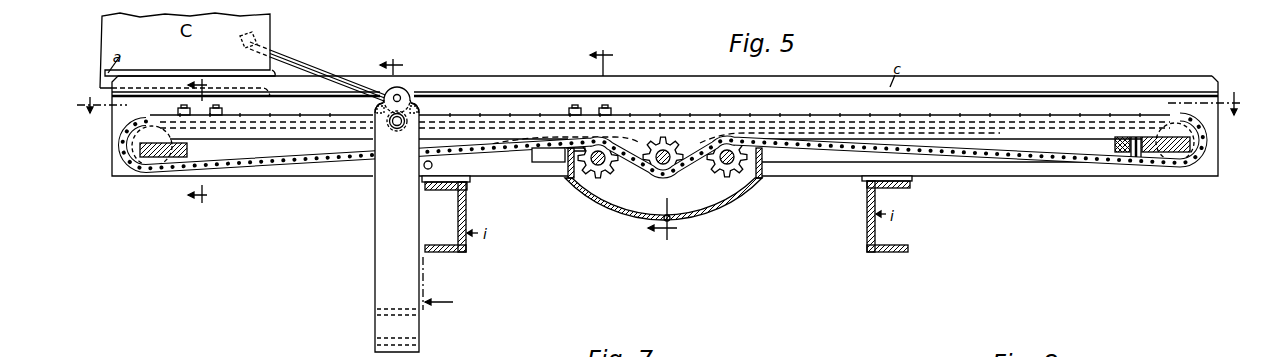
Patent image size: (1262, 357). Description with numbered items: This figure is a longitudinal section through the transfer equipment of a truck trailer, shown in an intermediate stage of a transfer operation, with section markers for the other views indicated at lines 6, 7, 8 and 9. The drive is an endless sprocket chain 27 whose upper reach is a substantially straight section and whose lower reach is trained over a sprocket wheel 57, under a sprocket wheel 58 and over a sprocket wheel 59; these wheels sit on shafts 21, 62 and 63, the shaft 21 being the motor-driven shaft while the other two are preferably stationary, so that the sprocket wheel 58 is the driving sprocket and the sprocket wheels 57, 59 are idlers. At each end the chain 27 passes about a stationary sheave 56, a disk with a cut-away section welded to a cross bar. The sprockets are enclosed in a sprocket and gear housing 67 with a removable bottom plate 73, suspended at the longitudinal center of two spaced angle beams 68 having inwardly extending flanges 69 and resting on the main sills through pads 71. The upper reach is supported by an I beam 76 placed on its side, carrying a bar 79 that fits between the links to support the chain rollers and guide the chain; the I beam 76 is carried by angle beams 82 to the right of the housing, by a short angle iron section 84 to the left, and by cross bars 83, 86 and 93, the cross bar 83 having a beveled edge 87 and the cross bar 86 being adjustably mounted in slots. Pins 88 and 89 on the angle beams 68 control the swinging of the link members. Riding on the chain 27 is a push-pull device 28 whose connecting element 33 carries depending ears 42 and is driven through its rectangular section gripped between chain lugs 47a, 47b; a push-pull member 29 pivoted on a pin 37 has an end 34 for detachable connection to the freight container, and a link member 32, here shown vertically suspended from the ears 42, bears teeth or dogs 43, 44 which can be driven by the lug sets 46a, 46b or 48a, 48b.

The section line 6- 6 is at (190, 140).
The section line 7- 7 is at (417, 177).
The section line 8- 8 is at (633, 147).
The section line 9- 9 is at (659, 115).
The driven shaft 21 is at (662, 179).
The endless sprocket chain 27 is at (958, 112).
The push-pull device 28 is at (419, 101).
The push-pull member 29 is at (321, 70).
The link member 32 is at (375, 233).
The connecting element 33 is at (406, 89).
The end of push-pull member 34 is at (246, 45).
The pin 37 is at (390, 94).
The depending ears 42 is at (395, 130).
The tooth or dog-like projection 43 is at (376, 308).
The tooth or dog-like projection 44 is at (376, 338).
The chain lug 46a is at (569, 110).
The chain lug 46b is at (611, 110).
The chain lug 47a is at (377, 109).
The chain lug 47b is at (418, 109).
The chain lug 48a is at (179, 112).
The chain lug 48b is at (222, 112).
The stationary sheave 56 is at (133, 148).
The sprocket wheel 57 is at (606, 168).
The sprocket wheel 58 is at (682, 175).
The sprocket wheel 59 is at (754, 180).
The shaft 62 is at (658, 168).
The shaft 63 is at (724, 166).
The sprocket and gear housing 67 is at (617, 209).
The angle beam 68 is at (118, 168).
The inwardly extending flange 69 is at (1020, 93).
The pad 71 is at (467, 183).
The removable bottom plate 73 is at (672, 220).
The I beam 76 is at (267, 138).
The bar 79 is at (1097, 122).
The angle beam 82 is at (807, 158).
The cross bar 83 is at (150, 158).
The angle iron section 84 is at (540, 163).
The cross bar 86 is at (1162, 163).
The beveled edge 87 is at (188, 151).
The pin 88 is at (242, 168).
The pin 89 is at (433, 165).
The cross bar 93 is at (1133, 163).